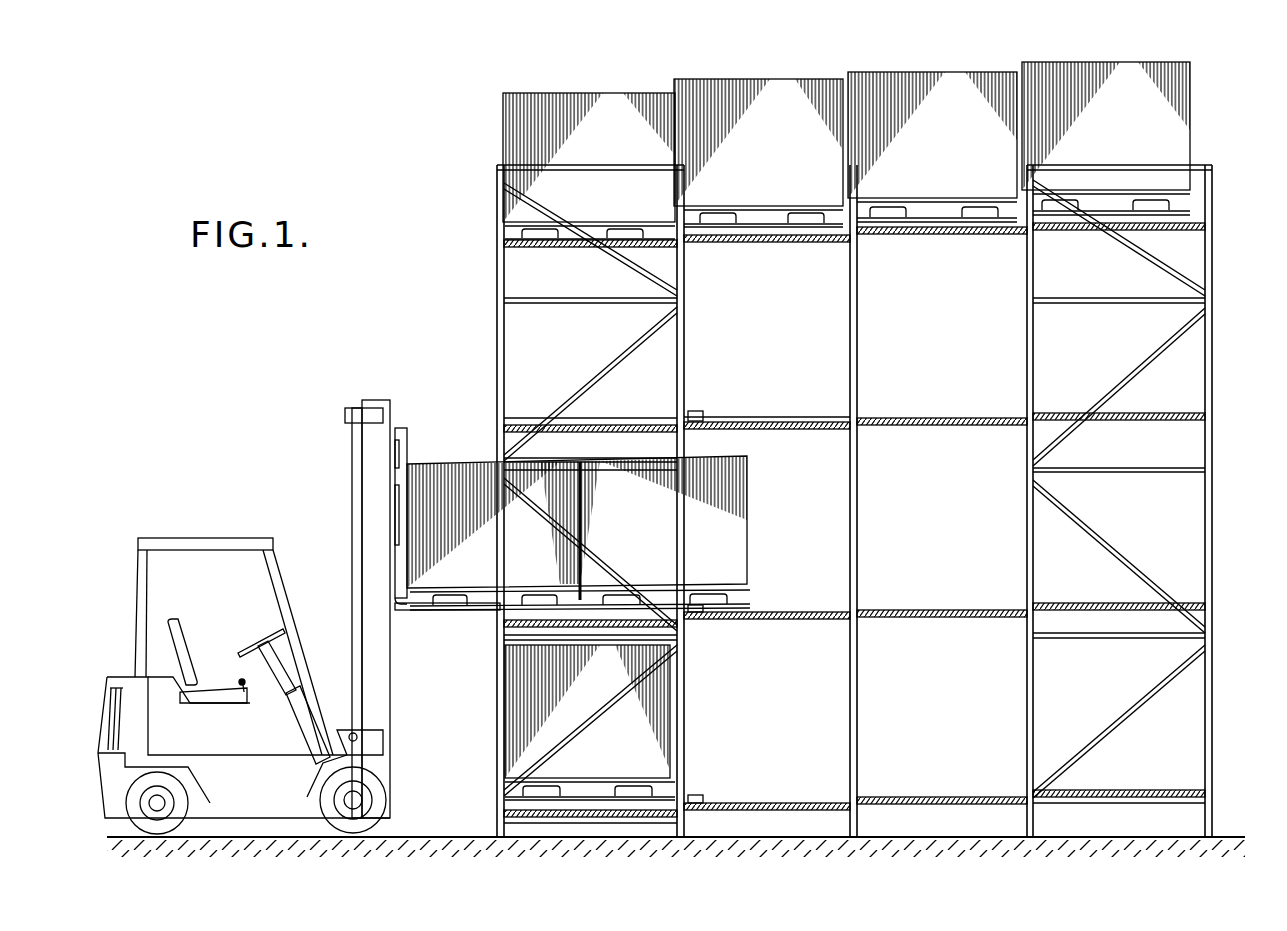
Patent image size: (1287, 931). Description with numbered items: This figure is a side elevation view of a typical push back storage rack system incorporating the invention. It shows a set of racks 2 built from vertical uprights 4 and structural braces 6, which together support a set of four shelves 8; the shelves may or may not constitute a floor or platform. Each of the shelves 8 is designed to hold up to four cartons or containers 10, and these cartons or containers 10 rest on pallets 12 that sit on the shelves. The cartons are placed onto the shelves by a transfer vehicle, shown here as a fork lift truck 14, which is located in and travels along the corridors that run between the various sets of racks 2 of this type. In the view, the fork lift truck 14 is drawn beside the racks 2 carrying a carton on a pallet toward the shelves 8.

The racks 2 is at (480, 346).
The vertical uprights 4 is at (858, 477).
The structural braces 6 is at (1118, 545).
The shelves 8 is at (900, 242).
The cartons or containers 10 is at (757, 95).
The pallets 12 is at (720, 226).
The fork lift trucks 14 is at (192, 528).